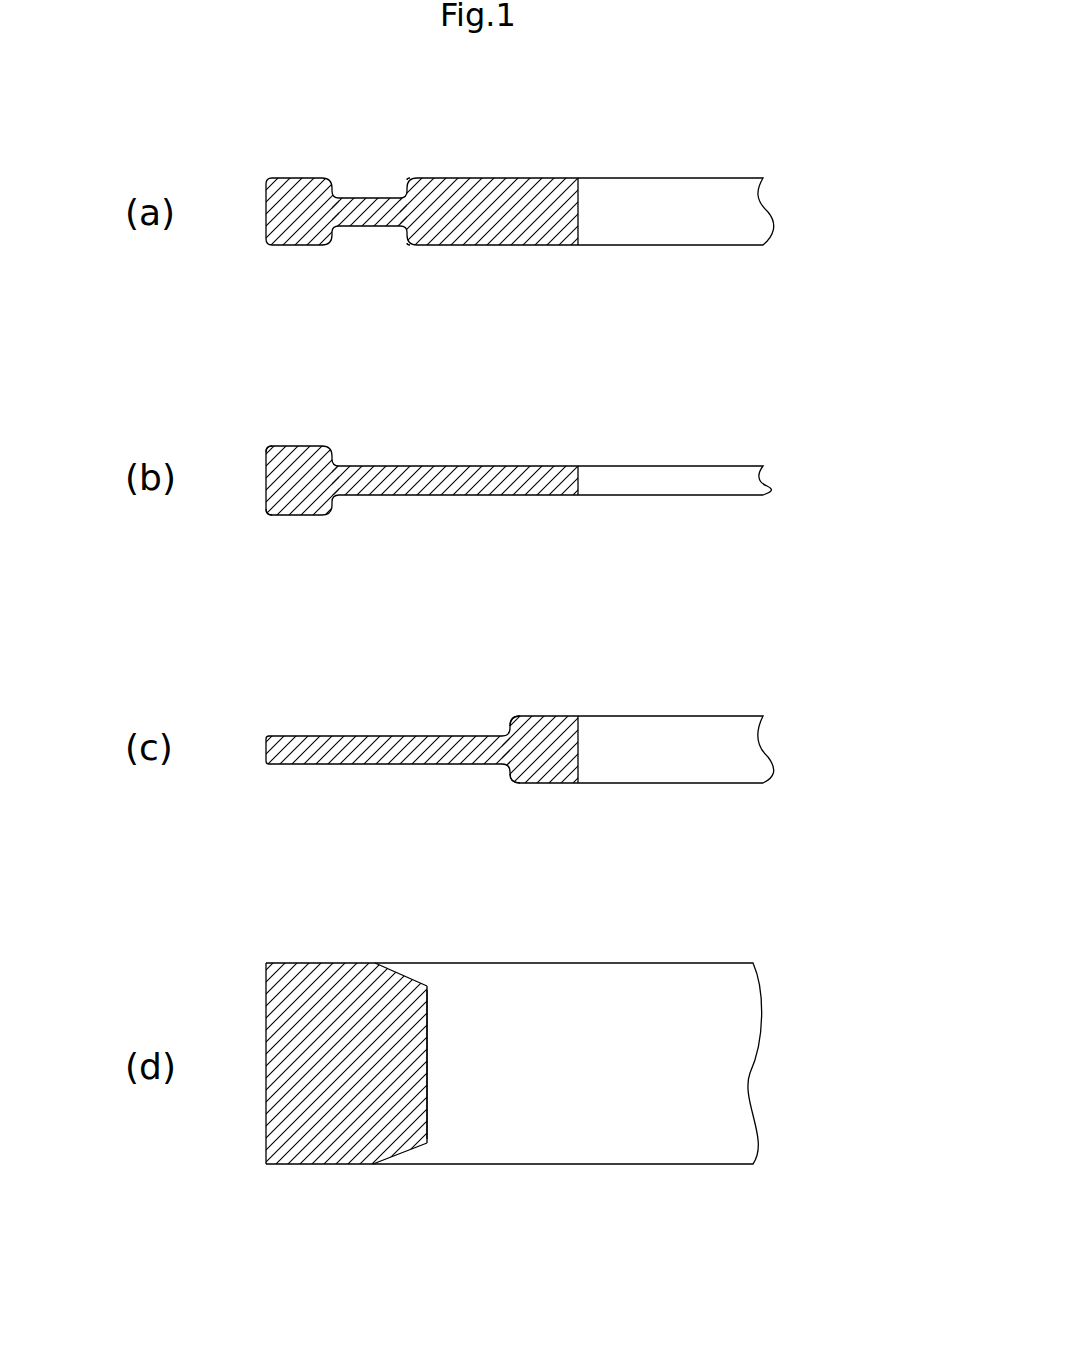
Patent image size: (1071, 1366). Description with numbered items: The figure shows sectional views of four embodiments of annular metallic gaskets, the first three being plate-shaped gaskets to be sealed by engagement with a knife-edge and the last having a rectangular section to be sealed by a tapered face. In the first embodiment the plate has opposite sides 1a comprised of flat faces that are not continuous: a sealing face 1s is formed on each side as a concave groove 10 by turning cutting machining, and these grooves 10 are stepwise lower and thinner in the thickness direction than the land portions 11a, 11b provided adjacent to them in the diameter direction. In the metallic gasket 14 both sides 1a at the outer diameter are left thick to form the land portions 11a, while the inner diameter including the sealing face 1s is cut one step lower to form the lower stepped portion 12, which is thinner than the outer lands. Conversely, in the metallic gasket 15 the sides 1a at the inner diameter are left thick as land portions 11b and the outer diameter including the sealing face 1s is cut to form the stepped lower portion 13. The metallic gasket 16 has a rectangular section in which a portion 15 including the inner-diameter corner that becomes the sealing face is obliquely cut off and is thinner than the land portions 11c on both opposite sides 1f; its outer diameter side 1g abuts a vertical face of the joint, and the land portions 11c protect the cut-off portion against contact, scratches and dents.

The concave groove 10 is at (373, 198).
The land portion 11a is at (302, 178).
The land portion 11b is at (510, 178).
The land portion 11c is at (332, 963).
The lower stepped portion 12 is at (453, 466).
The stepped lower portion 13 is at (262, 172).
The metallic gasket 14 is at (260, 440).
The metallic gasket 15 is at (262, 727).
The metallic gasket 16 is at (260, 938).
The opposite side 1a is at (453, 178).
The sealing face 1s is at (343, 198).
The opposite side 1f is at (312, 963).
The outer diameter side 1g is at (266, 1093).